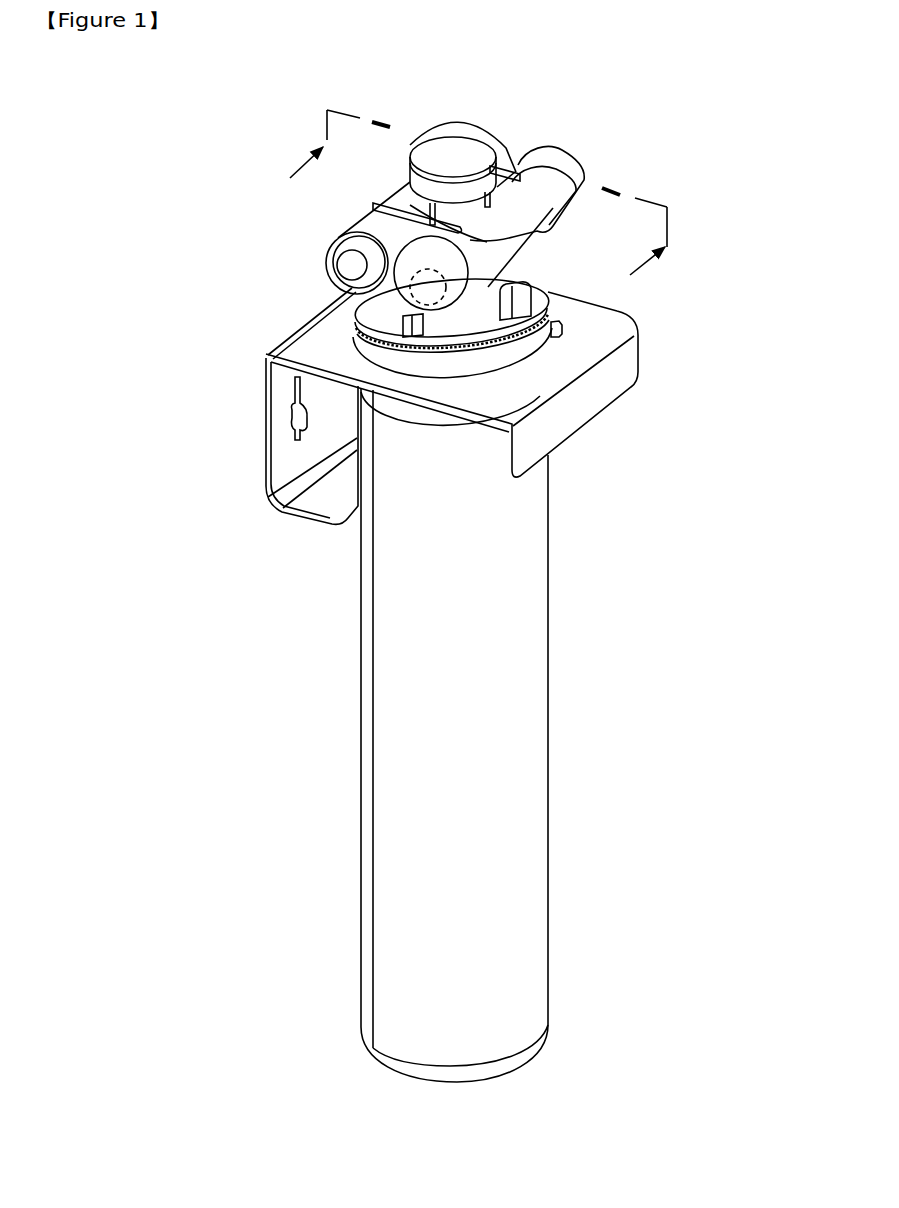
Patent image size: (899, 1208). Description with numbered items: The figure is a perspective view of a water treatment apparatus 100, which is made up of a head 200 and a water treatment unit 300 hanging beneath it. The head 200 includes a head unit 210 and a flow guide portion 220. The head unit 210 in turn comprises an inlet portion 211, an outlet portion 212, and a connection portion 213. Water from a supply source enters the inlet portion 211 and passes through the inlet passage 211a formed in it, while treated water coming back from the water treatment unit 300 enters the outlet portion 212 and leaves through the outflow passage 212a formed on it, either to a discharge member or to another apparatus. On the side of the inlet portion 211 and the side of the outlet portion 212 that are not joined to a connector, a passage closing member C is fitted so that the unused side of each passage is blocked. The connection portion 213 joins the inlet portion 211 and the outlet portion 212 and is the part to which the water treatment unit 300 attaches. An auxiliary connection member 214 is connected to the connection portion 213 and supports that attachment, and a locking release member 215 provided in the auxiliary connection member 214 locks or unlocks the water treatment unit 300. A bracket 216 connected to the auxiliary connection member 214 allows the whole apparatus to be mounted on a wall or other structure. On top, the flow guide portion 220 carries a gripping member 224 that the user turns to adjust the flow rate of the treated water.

The water treatment apparatus 100 is at (171, 98).
The head 200 is at (686, 134).
The head unit 210 is at (575, 158).
The inlet portion 211 is at (402, 196).
The inlet passage 211a is at (350, 268).
The outlet portion 212 is at (520, 240).
The outflow passage 212a is at (352, 349).
The connection portion 213 is at (478, 318).
The auxiliary connection member 214 is at (357, 318).
The locking release member 215 is at (520, 357).
The bracket 216 is at (267, 440).
The flow guide portion 220 is at (427, 134).
The gripping member 224 is at (474, 145).
The water treatment unit 300 is at (552, 836).
The passage closing member C is at (497, 143).